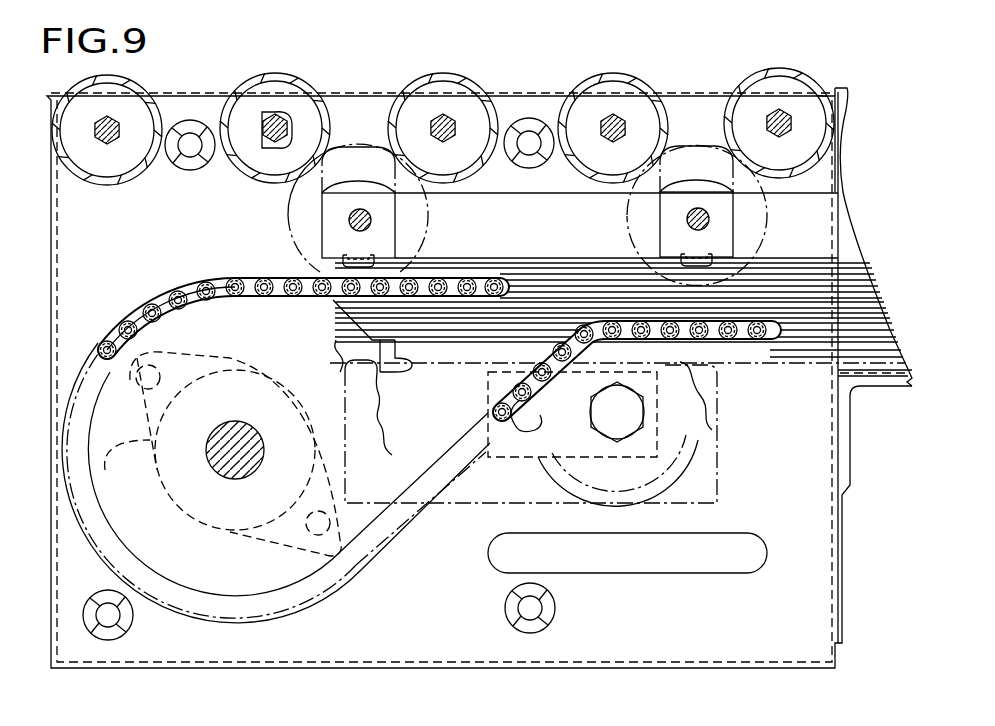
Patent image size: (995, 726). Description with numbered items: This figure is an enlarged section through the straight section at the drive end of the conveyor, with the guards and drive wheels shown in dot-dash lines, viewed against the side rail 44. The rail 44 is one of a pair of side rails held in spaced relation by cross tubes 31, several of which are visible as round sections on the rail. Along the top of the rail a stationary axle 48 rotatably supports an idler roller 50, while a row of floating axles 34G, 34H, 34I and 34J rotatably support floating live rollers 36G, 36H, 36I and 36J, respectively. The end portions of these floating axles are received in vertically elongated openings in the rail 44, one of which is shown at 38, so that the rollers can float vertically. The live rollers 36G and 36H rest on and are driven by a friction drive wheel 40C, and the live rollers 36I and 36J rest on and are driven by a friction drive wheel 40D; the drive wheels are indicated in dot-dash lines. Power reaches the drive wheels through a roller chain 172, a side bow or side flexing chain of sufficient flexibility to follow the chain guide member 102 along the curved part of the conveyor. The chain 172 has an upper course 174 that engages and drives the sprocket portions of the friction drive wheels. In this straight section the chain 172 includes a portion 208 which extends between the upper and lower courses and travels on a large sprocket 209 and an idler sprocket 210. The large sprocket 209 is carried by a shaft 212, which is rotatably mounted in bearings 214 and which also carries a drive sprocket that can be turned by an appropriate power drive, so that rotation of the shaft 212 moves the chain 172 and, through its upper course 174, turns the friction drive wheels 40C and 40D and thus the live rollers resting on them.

The side rail 44 is at (222, 628).
The idler roller 50 is at (125, 80).
The stationary axle 48 is at (125, 126).
The cross tube 31 is at (178, 165).
The floating live roller 36J is at (262, 75).
The floating axle 34J is at (290, 118).
The vertically elongated opening 38 is at (295, 176).
The floating live roller 36I is at (443, 73).
The floating axle 34I is at (450, 116).
The floating live roller 36H is at (613, 73).
The floating axle 34H is at (620, 115).
The floating live roller 36G is at (775, 68).
The floating axle 34G is at (788, 112).
The friction drive wheel 40D is at (292, 268).
The friction drive wheel 40C is at (758, 252).
The chain guide member 102 is at (620, 255).
The upper course 174 is at (468, 282).
The chain portion 208 is at (140, 322).
The roller chain 172 is at (757, 350).
The idler sprocket 210 is at (668, 440).
The large sprocket 209 is at (270, 573).
The shaft 212 is at (272, 445).
The bearing 214 is at (223, 454).